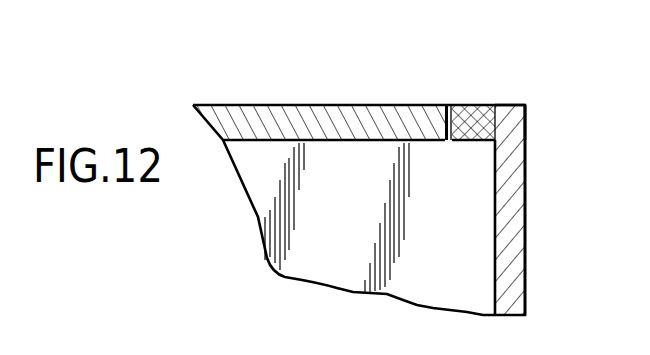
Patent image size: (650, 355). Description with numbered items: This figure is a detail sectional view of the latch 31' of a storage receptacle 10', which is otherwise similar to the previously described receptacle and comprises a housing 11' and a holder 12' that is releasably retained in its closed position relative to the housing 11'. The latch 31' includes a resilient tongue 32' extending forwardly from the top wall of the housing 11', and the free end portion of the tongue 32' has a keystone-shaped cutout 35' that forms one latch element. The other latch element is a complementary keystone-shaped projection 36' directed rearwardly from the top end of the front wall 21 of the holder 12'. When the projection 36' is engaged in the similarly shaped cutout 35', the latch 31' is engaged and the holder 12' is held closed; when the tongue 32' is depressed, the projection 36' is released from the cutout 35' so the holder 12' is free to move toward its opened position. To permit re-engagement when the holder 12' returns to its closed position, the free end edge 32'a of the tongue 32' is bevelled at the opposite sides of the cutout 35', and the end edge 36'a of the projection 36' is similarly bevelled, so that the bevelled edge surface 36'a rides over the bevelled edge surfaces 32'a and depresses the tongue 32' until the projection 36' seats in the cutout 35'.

The storage receptacle 10' is at (391, 166).
The housing 11' is at (340, 210).
The holder 12' is at (560, 210).
The front wall 21 is at (526, 182).
The latch 31' is at (473, 79).
The resilient tongue 32' is at (359, 94).
The free end edge of tongue 32'a is at (534, 95).
The keystone-shaped cutout 35' is at (435, 153).
The keystone-shaped projection 36' is at (476, 95).
The end edge of projection 36'a is at (465, 185).